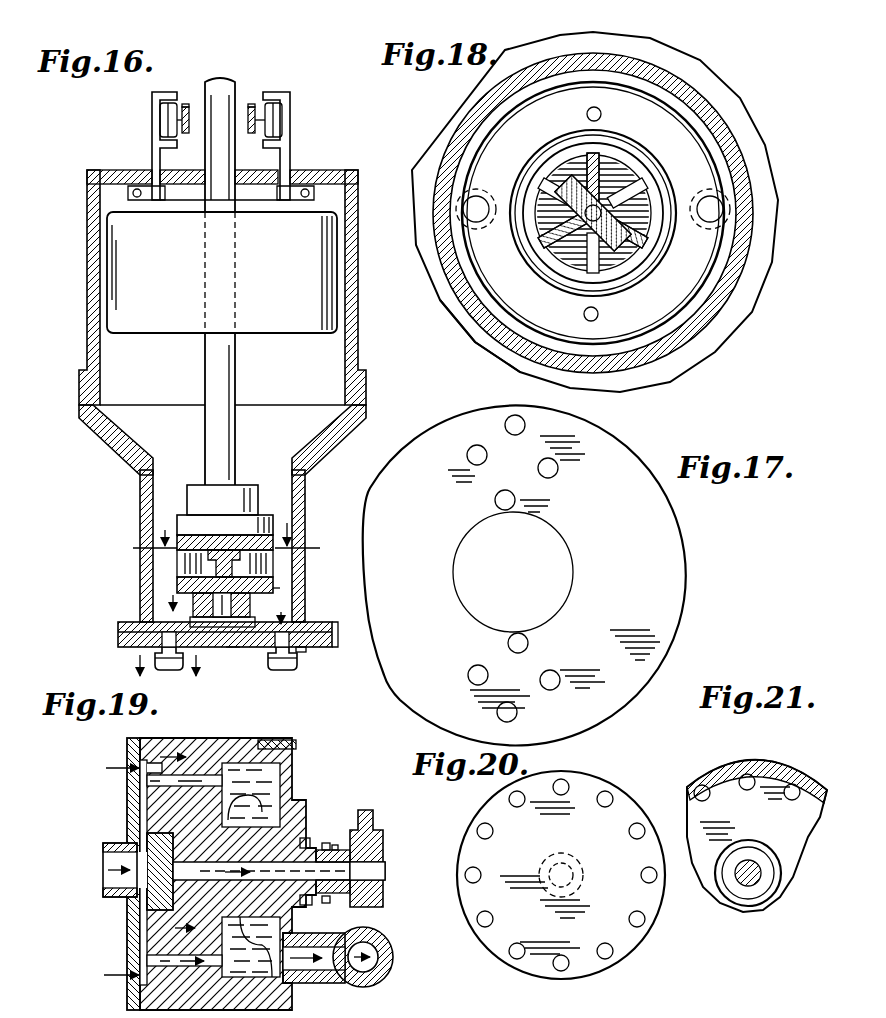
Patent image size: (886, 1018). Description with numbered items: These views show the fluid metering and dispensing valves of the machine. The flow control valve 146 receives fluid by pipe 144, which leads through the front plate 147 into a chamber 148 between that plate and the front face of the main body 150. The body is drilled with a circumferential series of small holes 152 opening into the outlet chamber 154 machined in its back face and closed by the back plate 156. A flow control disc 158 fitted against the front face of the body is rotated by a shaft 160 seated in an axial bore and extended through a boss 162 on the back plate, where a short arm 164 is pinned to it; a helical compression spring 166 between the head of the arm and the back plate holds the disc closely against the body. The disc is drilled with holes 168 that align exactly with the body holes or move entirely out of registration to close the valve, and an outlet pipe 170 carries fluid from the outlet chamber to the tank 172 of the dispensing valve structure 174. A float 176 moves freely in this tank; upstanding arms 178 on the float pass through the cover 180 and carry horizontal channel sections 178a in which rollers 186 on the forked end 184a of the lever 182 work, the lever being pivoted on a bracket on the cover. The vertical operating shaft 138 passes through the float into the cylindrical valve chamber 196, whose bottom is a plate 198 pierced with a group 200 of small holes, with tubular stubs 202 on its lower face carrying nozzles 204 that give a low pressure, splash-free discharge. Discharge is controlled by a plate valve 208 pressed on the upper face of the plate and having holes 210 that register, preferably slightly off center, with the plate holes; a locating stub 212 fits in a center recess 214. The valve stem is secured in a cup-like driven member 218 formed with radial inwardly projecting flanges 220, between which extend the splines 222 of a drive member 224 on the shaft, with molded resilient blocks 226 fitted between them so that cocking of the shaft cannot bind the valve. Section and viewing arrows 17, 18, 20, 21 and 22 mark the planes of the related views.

In FIG. 16, the vertical operating shaft 138 is at (222, 428).
In FIG. 19, the pipe 144 is at (103, 855).
In FIG. 19, the flow control valve 146 is at (124, 800).
In FIG. 19, the front plate 147 is at (127, 782).
In FIG. 19, the chamber 148 is at (146, 960).
In FIG. 19, the main body 150 is at (147, 822).
In FIG. 21, the main body 150 is at (727, 795).
In FIG. 21, the small holes 152 is at (793, 786).
In FIG. 19, the outlet chamber 154 is at (270, 778).
In FIG. 19, the back plate 156 is at (293, 800).
In FIG. 19, the flow control disc 158 is at (155, 923).
In FIG. 20, the flow control disc 158 is at (626, 790).
In FIG. 19, the shaft 160 is at (376, 866).
In FIG. 20, the shaft 160 is at (574, 868).
In FIG. 21, the shaft 160 is at (744, 882).
In FIG. 19, the boss 162 is at (305, 843).
In FIG. 19, the short arm 164 is at (373, 818).
In FIG. 19, the helical compression spring 166 is at (318, 900).
In FIG. 19, the holes 168 is at (128, 742).
In FIG. 20, the holes 168 is at (600, 800).
In FIG. 19, the outlet pipe 170 is at (355, 973).
In FIG. 16, the tank 172 is at (88, 333).
In FIG. 16, the dispensing valve structure 174 is at (182, 611).
In FIG. 18, the dispensing valve structure 174 is at (497, 270).
In FIG. 16, the float 176 is at (250, 322).
In FIG. 16, the upstanding arms 178 is at (268, 157).
In FIG. 16, the horizontal channel sections 178a is at (152, 98).
In FIG. 16, the cover 180 is at (316, 172).
In FIG. 16, the lever 182 is at (257, 105).
In FIG. 16, the forked end 184a is at (185, 104).
In FIG. 16, the rollers 186 is at (165, 118).
In FIG. 16, the cylindrical valve chamber 196 is at (146, 462).
In FIG. 18, the cylindrical valve chamber 196 is at (456, 115).
In FIG. 16, the plate 198 is at (118, 643).
In FIG. 18, the plate 198 is at (456, 320).
In FIG. 16, the group of small holes 200 is at (334, 640).
In FIG. 16, the tubular stubs 202 is at (299, 650).
In FIG. 16, the nozzles 204 is at (170, 671).
In FIG. 18, the nozzles 204 is at (731, 198).
In FIG. 16, the plate valve 208 is at (232, 655).
In FIG. 18, the plate valve 208 is at (672, 108).
In FIG. 17, the plate valve 208 is at (634, 567).
In FIG. 18, the holes 210 is at (590, 108).
In FIG. 17, the holes 210 is at (514, 436).
In FIG. 16, the locating stub 212 is at (215, 590).
In FIG. 16, the center recess 214 is at (238, 648).
In FIG. 16, the cup-like driven member 218 is at (280, 588).
In FIG. 18, the cup-like driven member 218 is at (650, 248).
In FIG. 16, the radial inwardly projecting flanges 220 is at (177, 560).
In FIG. 18, the radial inwardly projecting flanges 220 is at (600, 186).
In FIG. 16, the splines 222 is at (280, 566).
In FIG. 18, the splines 222 is at (601, 148).
In FIG. 16, the drive member 224 is at (255, 520).
In FIG. 18, the resilient blocks 226 is at (520, 238).
In FIG. 16, the section line 17 is at (227, 602).
In FIG. 16, the section line 18 is at (226, 525).
In FIG. 19, the section line 20 is at (108, 874).
In FIG. 19, the section line 21 is at (192, 844).
In FIG. 16, the section line 22 is at (169, 667).